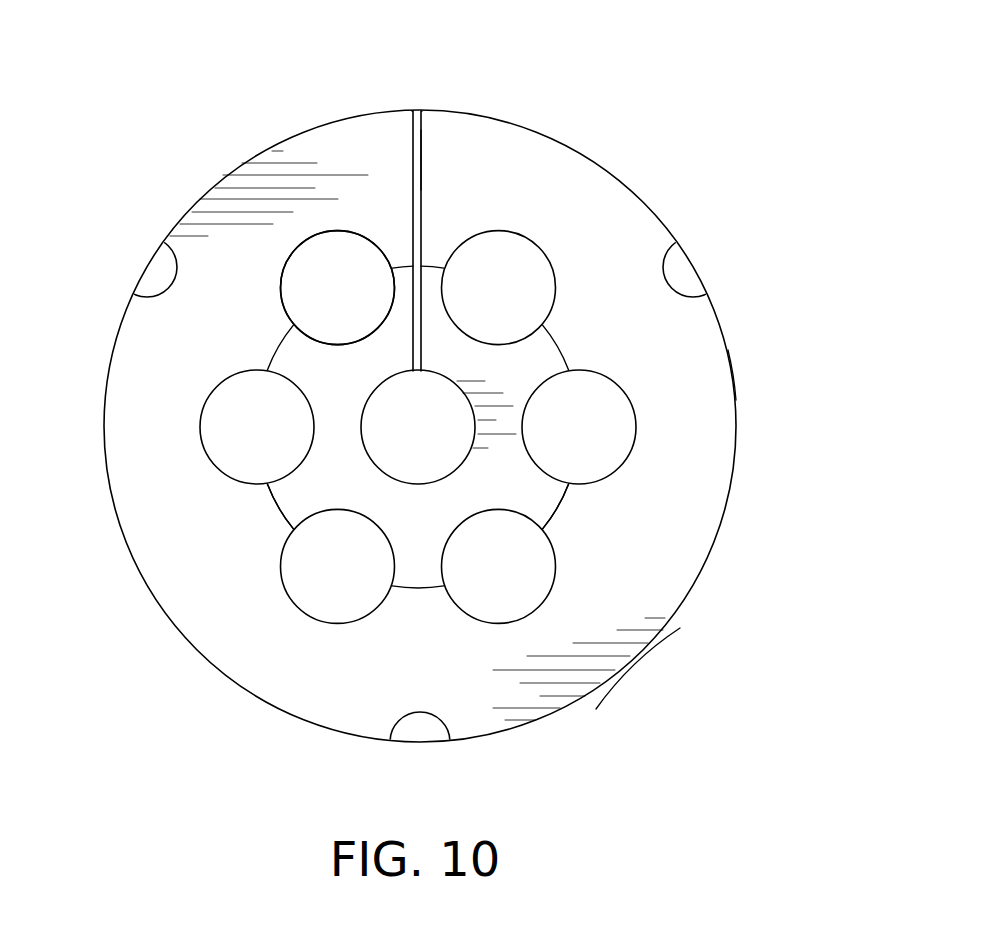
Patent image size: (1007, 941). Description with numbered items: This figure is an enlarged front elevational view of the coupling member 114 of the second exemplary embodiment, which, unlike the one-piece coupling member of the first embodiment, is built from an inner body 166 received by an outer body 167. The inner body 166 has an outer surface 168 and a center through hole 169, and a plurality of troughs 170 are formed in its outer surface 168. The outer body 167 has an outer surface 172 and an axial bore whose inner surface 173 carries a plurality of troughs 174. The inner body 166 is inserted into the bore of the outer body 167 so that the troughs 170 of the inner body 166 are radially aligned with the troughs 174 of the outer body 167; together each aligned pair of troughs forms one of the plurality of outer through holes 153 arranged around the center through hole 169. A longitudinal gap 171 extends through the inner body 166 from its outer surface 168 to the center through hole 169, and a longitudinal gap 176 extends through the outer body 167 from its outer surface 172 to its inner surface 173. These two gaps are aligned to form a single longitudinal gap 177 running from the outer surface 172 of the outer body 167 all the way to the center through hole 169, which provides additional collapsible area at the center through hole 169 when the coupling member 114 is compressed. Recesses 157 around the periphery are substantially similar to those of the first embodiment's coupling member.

The coupling member 114 is at (605, 154).
The outer through holes 153 is at (337, 263).
The recesses 157 is at (162, 282).
The inner body 166 is at (262, 515).
The outer body 167 is at (647, 662).
The outer surface 168 is at (545, 325).
The center through hole 169 is at (375, 466).
The troughs 170 is at (323, 338).
The longitudinal gap 171 is at (412, 294).
The outer surface 172 is at (736, 393).
The inner surface 173 is at (562, 508).
The troughs 174 is at (215, 425).
The longitudinal gap 176 is at (422, 175).
The longitudinal gap 177 is at (422, 143).